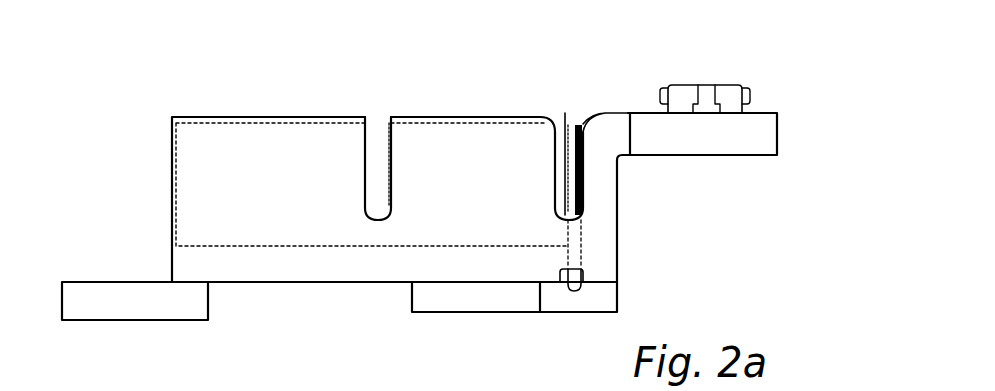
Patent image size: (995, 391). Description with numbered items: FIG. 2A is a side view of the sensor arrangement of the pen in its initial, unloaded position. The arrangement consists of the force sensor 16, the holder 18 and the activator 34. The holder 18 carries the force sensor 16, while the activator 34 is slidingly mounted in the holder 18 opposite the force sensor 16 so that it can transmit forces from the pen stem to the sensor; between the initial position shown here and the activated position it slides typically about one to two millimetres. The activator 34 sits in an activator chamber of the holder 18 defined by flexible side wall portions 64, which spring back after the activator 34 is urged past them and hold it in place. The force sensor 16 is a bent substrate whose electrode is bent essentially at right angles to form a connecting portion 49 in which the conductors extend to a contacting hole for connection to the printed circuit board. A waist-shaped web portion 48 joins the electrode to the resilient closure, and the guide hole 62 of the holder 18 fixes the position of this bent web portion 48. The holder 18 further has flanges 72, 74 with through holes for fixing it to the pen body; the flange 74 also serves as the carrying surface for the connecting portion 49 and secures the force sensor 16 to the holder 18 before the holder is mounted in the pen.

The force sensor 16 is at (576, 109).
The holder 18 is at (607, 208).
The activator 34 is at (378, 136).
The web portion 48 is at (574, 298).
The connecting portion 49 is at (765, 104).
The guide hole 62 is at (566, 284).
The flexible side wall portions 64 is at (475, 133).
The flange 72 is at (108, 320).
The flange 74 is at (777, 137).